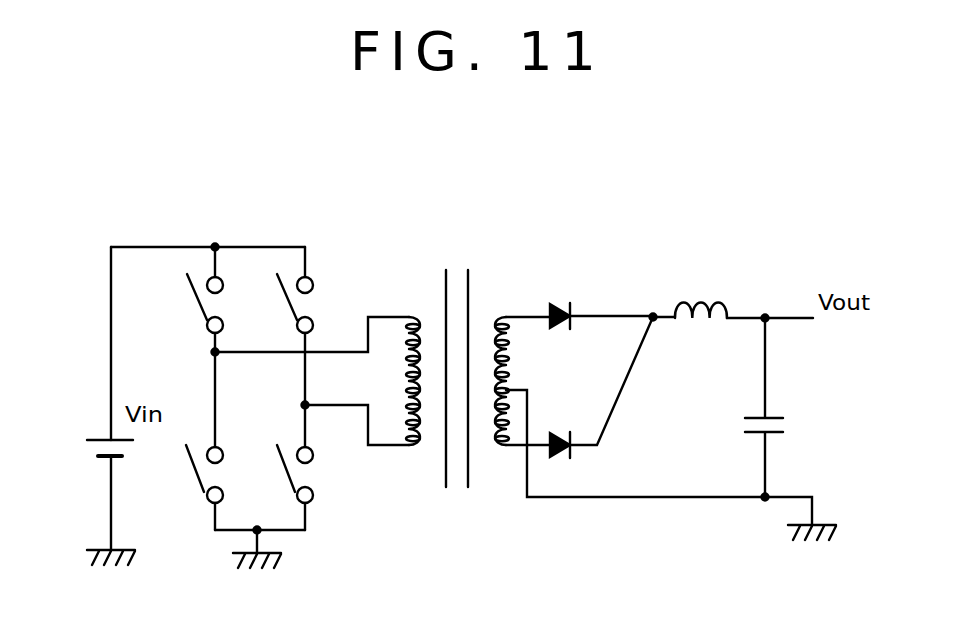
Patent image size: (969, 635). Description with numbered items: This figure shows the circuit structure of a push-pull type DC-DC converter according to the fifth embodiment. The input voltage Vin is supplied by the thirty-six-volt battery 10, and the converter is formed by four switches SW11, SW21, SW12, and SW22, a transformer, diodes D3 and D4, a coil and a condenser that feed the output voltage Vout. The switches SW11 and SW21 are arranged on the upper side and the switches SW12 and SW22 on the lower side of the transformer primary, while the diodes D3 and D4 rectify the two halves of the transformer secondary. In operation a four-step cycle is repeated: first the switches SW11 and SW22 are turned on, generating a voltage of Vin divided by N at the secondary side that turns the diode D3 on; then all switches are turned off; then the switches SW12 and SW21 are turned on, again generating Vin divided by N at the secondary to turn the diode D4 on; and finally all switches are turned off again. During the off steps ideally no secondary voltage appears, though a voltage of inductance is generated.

The 36-volt battery 10 is at (95, 450).
The switch SW11 is at (192, 307).
The switch SW12 is at (192, 477).
The switch SW21 is at (307, 306).
The switch SW22 is at (307, 472).
The diode D3 is at (562, 310).
The diode D4 is at (562, 437).